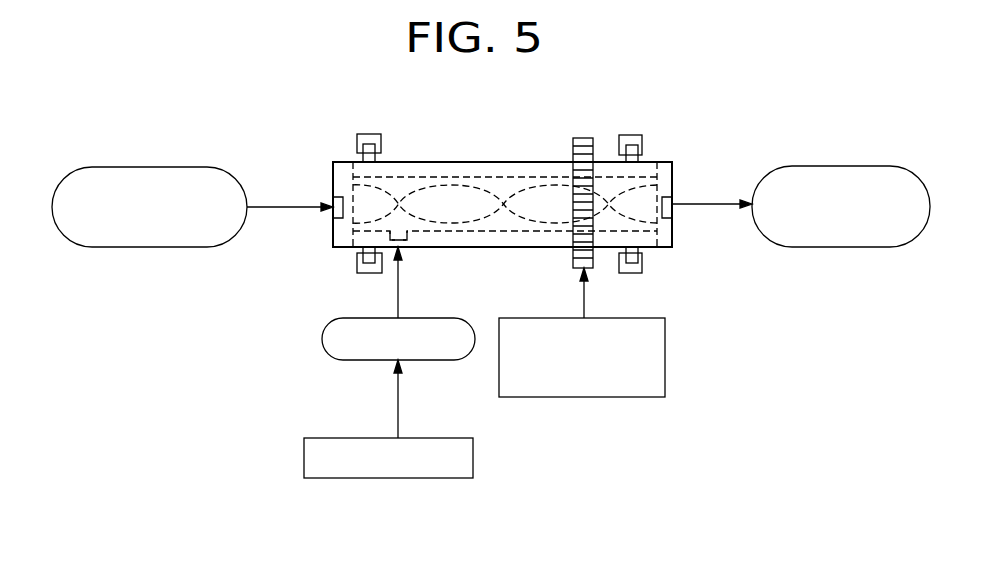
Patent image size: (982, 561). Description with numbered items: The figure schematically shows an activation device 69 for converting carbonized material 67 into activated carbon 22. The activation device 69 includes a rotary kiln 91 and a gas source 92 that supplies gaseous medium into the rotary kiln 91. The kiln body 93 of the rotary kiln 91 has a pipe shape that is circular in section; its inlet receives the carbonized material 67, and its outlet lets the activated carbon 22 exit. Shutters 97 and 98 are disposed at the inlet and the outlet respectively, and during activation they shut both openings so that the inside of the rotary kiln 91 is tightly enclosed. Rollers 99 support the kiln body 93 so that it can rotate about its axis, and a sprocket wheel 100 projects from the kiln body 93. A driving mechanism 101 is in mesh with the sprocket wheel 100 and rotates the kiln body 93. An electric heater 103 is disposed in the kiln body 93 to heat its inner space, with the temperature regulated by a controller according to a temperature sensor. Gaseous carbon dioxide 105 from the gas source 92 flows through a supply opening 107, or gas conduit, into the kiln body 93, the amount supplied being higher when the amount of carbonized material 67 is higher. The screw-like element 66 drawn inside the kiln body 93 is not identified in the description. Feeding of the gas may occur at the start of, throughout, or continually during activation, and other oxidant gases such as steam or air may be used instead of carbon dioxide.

The carbonized material 67 is at (140, 248).
The activated carbon 22 is at (850, 248).
The rotary kiln 91 is at (665, 257).
The kiln body 93 is at (533, 249).
The screw conveyor 66 is at (437, 205).
The electric heater 103 is at (497, 172).
The shutter 97 is at (333, 198).
The shutter 98 is at (672, 210).
The rollers 99 is at (357, 137).
The sprocket wheel 100 is at (578, 138).
The supply opening 107 is at (418, 252).
The gaseous carbon dioxide 105 is at (440, 362).
The gas source 92 is at (473, 455).
The driving mechanism 101 is at (585, 398).
The activation device 69 is at (621, 482).